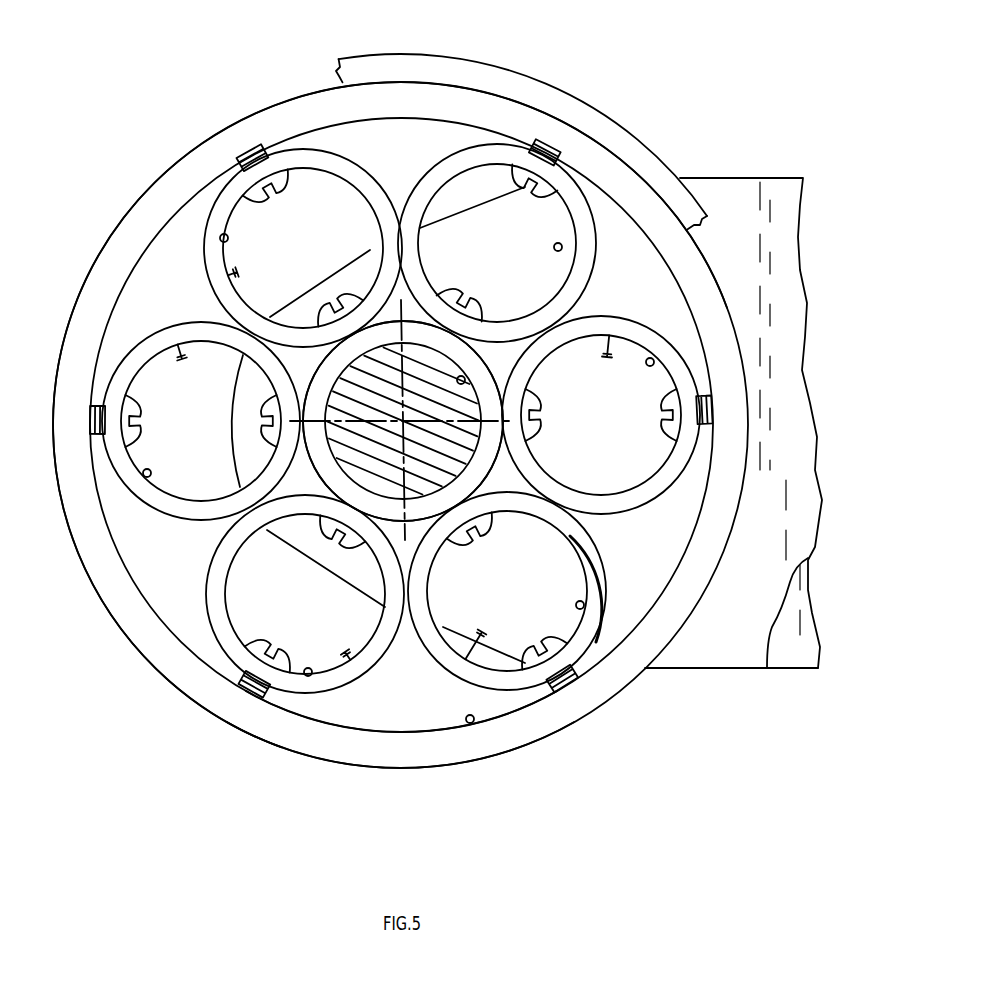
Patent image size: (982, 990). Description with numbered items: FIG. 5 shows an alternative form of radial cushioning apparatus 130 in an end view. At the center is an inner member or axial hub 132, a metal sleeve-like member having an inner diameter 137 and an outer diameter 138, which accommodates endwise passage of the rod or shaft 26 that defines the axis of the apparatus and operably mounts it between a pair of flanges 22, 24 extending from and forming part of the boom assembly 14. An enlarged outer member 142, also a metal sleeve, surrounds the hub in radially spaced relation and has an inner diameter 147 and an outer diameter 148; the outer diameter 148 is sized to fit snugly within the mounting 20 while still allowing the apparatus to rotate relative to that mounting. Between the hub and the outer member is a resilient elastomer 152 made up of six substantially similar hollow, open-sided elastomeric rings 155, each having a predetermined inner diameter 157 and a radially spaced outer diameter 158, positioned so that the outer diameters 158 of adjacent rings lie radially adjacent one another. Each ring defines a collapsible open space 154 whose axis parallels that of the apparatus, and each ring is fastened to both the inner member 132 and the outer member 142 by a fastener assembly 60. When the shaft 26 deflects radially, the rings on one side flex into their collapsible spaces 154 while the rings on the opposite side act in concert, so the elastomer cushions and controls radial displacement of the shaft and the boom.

The radial cushioning apparatus 130 is at (246, 60).
The mounting 20 is at (477, 75).
The outer member 142 is at (157, 203).
The outer diameter 148 is at (350, 763).
The inner diameter 147 is at (472, 723).
The flange 24 is at (728, 190).
The flange 22 is at (786, 664).
The boom assembly 14 is at (743, 704).
The rod or shaft 26 is at (497, 462).
The outer diameter 138 is at (310, 463).
The inner member or axial hub 132 is at (468, 455).
The inner diameter 137 is at (464, 378).
The elastomeric ring 155 is at (355, 162).
The fastener assembly 60 is at (326, 281).
The outer diameter 158 is at (313, 150).
The inner diameter 157 is at (221, 238).
The collapsible open space 154 is at (236, 273).
The resilient elastomer 152 is at (124, 540).